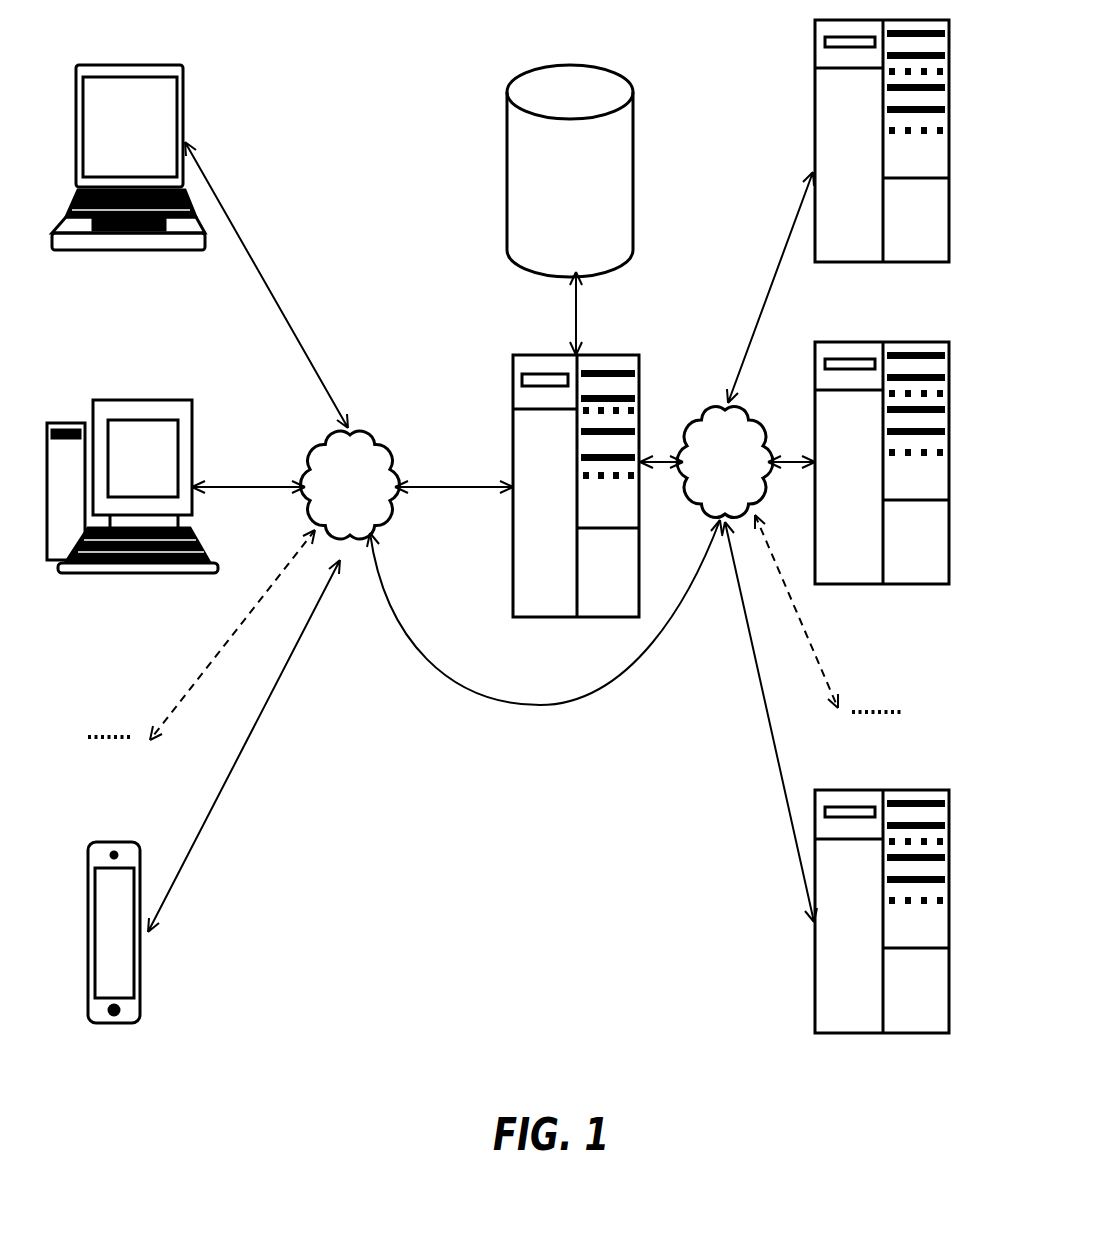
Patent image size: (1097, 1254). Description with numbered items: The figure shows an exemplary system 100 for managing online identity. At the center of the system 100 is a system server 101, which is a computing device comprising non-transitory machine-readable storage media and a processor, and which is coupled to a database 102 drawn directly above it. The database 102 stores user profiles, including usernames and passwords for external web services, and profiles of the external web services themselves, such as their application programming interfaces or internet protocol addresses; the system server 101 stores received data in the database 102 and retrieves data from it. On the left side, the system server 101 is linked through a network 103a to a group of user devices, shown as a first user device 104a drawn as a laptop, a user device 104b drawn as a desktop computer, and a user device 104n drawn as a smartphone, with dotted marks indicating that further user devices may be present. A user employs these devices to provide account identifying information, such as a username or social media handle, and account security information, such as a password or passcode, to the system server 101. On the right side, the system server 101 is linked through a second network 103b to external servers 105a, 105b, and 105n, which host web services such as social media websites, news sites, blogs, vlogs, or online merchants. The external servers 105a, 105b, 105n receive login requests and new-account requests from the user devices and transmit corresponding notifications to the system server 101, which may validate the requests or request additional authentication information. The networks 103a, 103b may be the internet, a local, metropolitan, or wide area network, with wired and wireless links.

The system 100 is at (567, 1052).
The system server 101 is at (576, 486).
The database 102 is at (570, 171).
The network 103a is at (349, 485).
The network 103b is at (725, 462).
The first user device 104a is at (128, 157).
The user device 104b is at (132, 486).
The user device 104n is at (120, 950).
The external server 105a is at (882, 141).
The external server 105b is at (882, 463).
The external server 105n is at (882, 911).